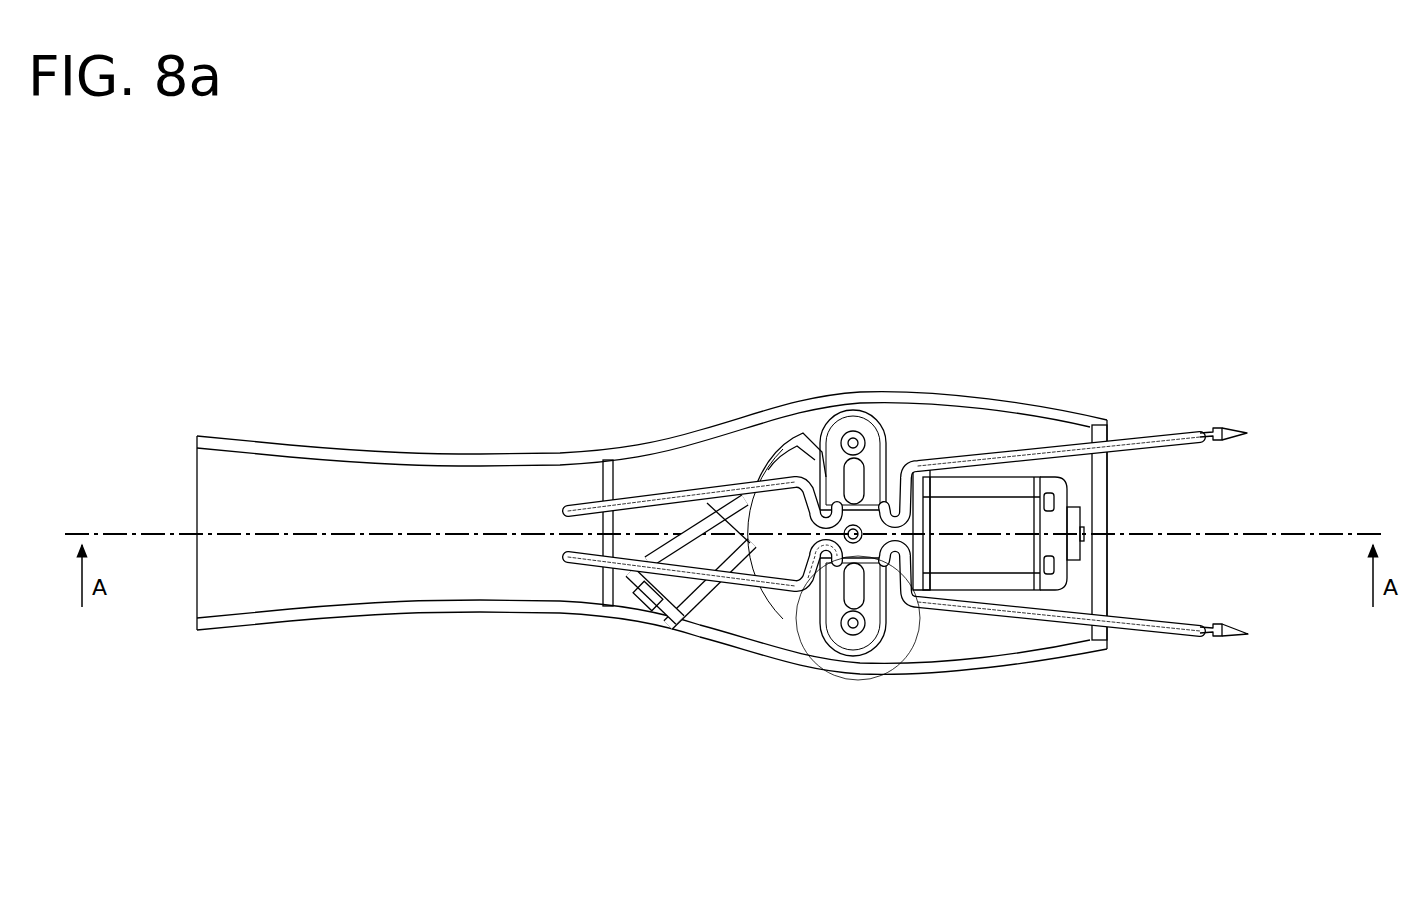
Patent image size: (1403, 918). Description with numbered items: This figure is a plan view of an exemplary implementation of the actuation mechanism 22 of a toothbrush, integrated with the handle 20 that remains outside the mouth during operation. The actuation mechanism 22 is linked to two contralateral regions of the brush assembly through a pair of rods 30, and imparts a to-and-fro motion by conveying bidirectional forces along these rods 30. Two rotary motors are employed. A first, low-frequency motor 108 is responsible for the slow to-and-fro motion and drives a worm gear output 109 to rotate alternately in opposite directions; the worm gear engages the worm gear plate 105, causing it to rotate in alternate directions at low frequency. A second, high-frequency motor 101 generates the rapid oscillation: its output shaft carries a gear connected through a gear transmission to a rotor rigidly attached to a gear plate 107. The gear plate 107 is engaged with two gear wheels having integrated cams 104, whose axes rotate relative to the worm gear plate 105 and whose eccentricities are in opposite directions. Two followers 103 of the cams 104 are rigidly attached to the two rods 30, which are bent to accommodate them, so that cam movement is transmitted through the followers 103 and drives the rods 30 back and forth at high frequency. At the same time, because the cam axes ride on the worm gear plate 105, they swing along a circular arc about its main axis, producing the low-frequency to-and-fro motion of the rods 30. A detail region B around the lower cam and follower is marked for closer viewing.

The handle 20 is at (460, 616).
The actuation mechanism 22 is at (966, 366).
The rods 30 is at (657, 484).
The high-frequency motor 101 is at (1007, 470).
The followers 103 is at (878, 628).
The gear wheels with integrated cams 104 is at (886, 417).
The worm gear plate 105 is at (802, 431).
The gear plate 107 is at (812, 596).
The low-frequency motor 108 is at (689, 610).
The worm gear output 109 is at (760, 456).
The detail B is at (858, 634).